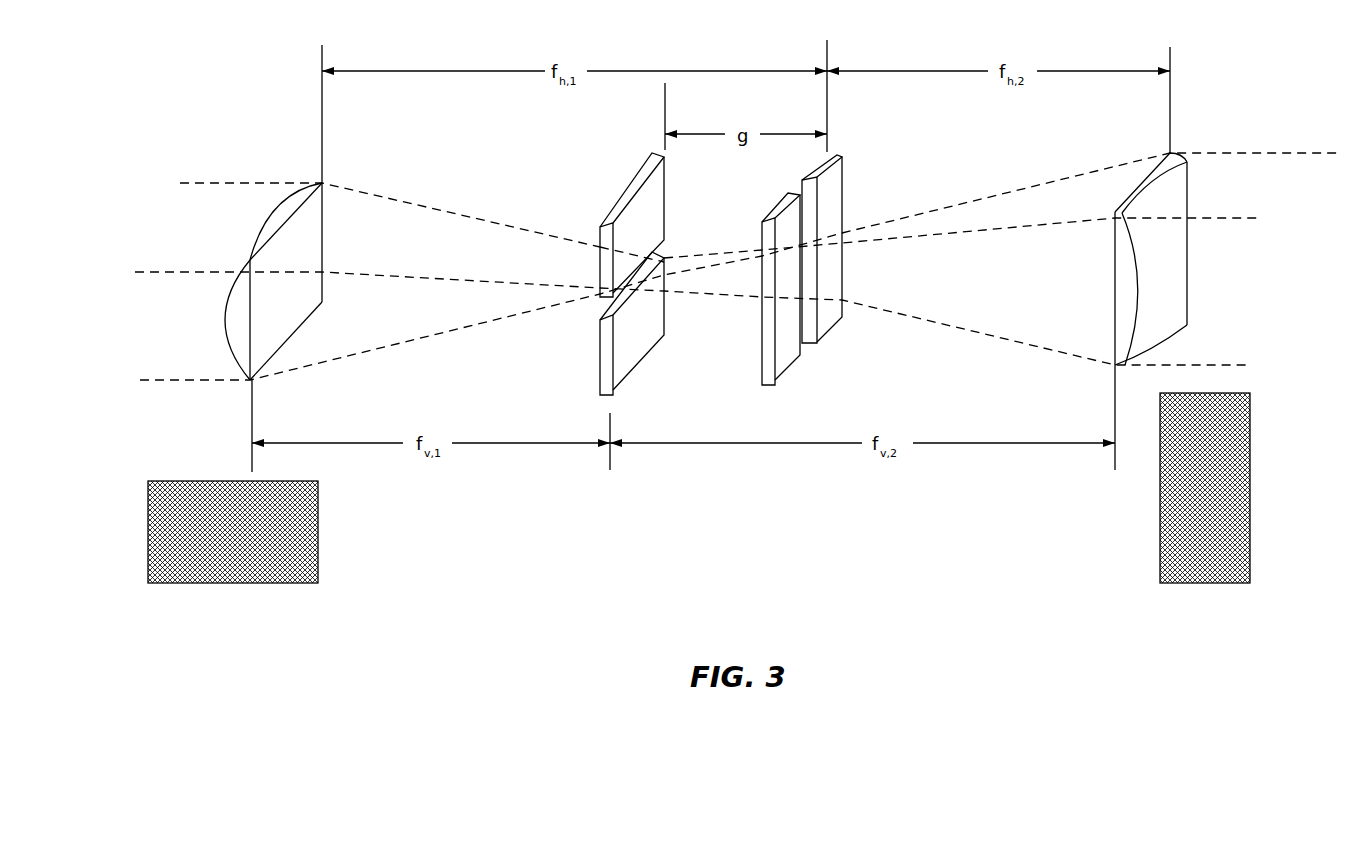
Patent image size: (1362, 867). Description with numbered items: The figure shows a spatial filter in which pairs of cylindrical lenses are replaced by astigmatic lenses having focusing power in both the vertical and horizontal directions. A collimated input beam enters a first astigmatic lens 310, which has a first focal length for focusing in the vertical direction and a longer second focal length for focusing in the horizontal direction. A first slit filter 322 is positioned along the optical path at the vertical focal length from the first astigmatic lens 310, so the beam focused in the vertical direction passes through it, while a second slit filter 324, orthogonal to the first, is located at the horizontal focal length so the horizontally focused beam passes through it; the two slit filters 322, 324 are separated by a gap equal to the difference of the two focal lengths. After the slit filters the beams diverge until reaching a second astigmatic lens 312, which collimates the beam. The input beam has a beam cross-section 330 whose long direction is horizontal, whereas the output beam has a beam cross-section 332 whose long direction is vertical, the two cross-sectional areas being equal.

The first astigmatic lens 310 is at (265, 327).
The second astigmatic lens 312 is at (1167, 268).
The first slit filter 322 is at (632, 342).
The second slit filter 324 is at (783, 343).
The beam cross-section 330 is at (263, 563).
The beam cross-section 332 is at (1197, 552).